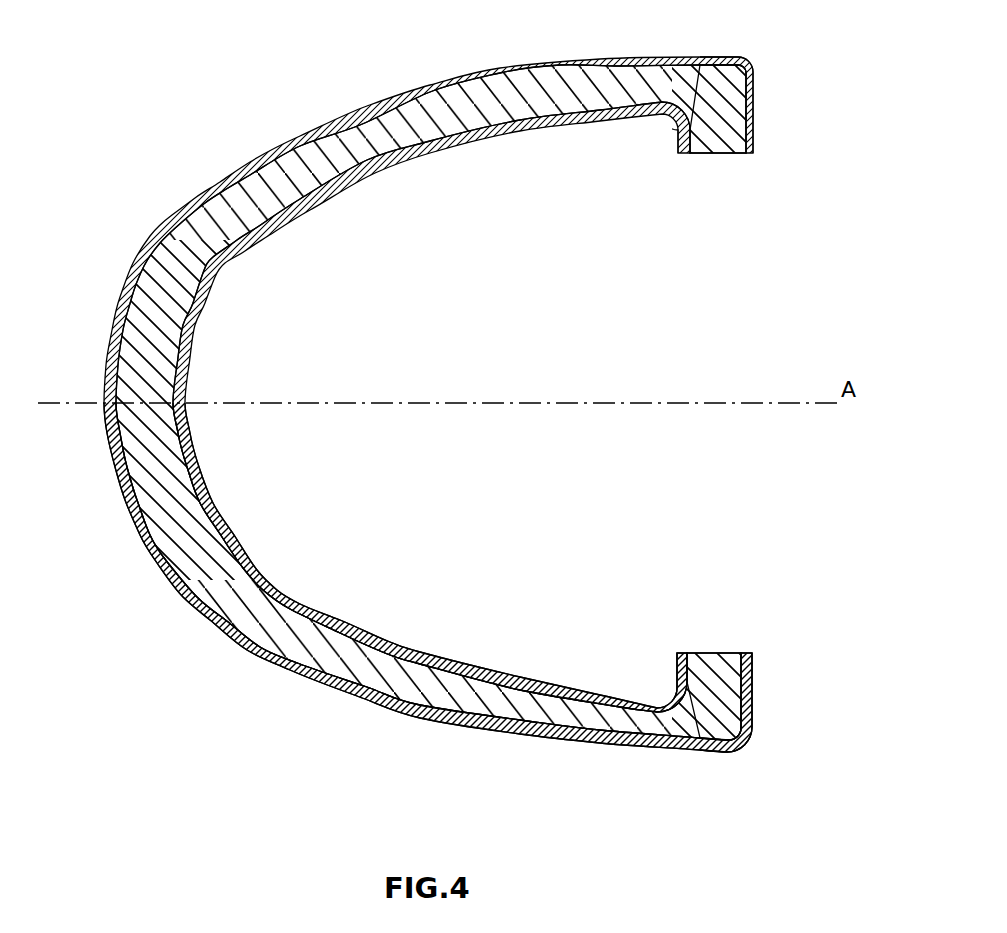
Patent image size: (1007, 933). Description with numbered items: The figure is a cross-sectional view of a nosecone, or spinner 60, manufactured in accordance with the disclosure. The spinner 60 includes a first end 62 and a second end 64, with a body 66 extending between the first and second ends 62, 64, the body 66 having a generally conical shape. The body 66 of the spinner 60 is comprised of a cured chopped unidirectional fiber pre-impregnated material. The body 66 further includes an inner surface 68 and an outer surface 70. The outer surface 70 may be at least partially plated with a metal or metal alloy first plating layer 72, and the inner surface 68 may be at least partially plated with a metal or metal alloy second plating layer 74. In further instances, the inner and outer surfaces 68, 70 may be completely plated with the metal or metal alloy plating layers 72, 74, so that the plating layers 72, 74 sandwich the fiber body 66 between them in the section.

The spinner 60 is at (439, 409).
The first end 62 is at (107, 329).
The second end 64 is at (762, 91).
The body 66 is at (439, 108).
The inner surface 68 is at (243, 574).
The outer surface 70 is at (660, 752).
The first plating layer 72 is at (200, 619).
The second plating layer 74 is at (527, 682).